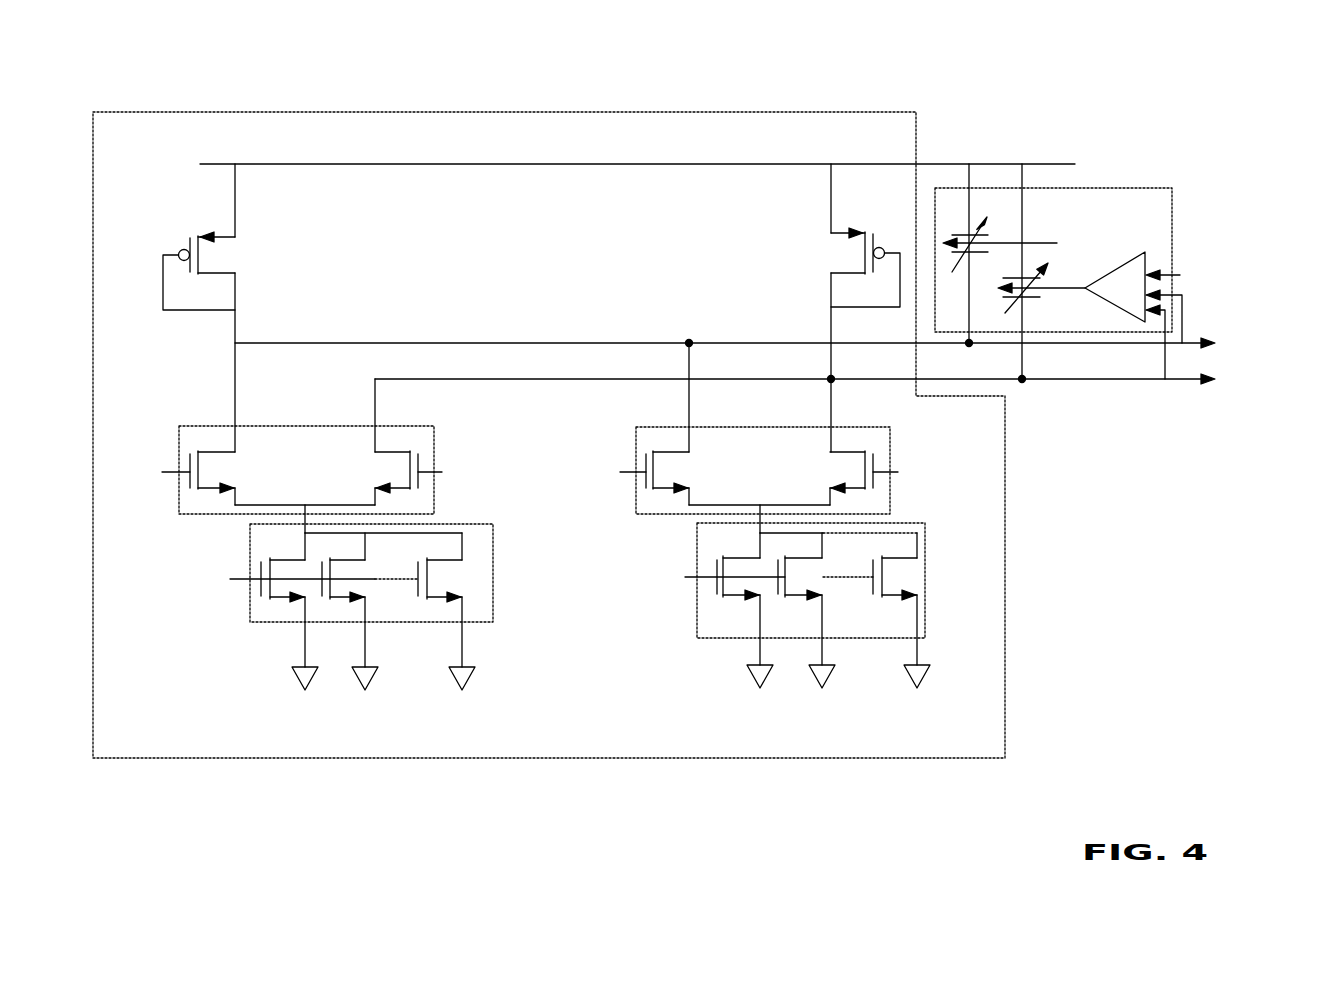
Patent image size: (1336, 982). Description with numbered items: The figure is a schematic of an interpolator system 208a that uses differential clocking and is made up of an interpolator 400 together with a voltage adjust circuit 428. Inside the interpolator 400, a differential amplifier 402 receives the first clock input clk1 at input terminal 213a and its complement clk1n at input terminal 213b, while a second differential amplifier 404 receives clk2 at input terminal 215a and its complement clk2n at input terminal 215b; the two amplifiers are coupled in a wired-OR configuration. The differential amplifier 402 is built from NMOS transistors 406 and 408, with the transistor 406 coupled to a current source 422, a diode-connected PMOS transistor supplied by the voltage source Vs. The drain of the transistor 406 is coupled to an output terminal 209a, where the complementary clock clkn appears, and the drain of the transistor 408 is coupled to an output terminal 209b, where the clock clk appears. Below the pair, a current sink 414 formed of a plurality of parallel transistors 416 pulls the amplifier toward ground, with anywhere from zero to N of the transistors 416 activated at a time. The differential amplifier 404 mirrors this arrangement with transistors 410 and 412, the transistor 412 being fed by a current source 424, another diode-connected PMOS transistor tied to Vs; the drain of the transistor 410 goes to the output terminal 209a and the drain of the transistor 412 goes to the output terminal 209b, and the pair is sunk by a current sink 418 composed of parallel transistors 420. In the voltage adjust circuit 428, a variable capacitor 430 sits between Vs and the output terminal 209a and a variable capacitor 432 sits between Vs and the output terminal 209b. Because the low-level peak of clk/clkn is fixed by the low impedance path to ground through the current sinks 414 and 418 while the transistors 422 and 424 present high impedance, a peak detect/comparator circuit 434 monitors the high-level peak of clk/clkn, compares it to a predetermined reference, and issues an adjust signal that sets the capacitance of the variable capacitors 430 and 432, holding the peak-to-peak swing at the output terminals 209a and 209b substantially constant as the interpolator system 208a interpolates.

The interpolator system 208a is at (1163, 94).
The interpolator 400 is at (622, 139).
The differential amplifier 402 is at (208, 426).
The differential amplifier 404 is at (846, 427).
The transistor 406 is at (225, 453).
The transistor 408 is at (383, 453).
The transistor 410 is at (688, 453).
The transistor 412 is at (820, 452).
The current sink 414 is at (380, 607).
The transistors 416 is at (258, 588).
The current sink 418 is at (821, 605).
The transistors 420 is at (715, 587).
The current source 422 is at (226, 272).
The current source 424 is at (838, 232).
The voltage adjust circuit 428 is at (1142, 187).
The variable capacitor 430 is at (986, 220).
The variable capacitor 432 is at (1050, 266).
The peak detect/comparator circuit 434 is at (1145, 252).
The output terminal 209a is at (1190, 335).
The output terminal 209b is at (1180, 380).
The input terminal 213a is at (173, 473).
The input terminal 213b is at (442, 470).
The input terminal 215a is at (627, 472).
The input terminal 215b is at (900, 474).